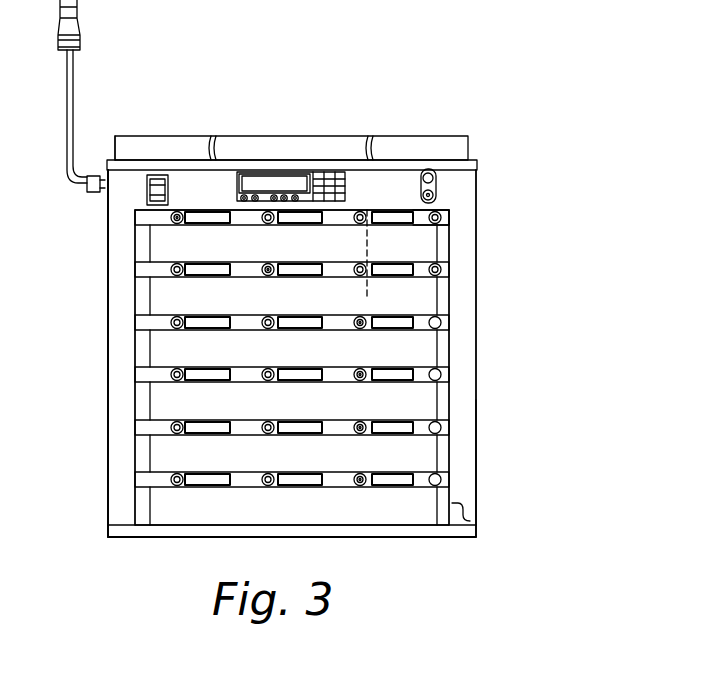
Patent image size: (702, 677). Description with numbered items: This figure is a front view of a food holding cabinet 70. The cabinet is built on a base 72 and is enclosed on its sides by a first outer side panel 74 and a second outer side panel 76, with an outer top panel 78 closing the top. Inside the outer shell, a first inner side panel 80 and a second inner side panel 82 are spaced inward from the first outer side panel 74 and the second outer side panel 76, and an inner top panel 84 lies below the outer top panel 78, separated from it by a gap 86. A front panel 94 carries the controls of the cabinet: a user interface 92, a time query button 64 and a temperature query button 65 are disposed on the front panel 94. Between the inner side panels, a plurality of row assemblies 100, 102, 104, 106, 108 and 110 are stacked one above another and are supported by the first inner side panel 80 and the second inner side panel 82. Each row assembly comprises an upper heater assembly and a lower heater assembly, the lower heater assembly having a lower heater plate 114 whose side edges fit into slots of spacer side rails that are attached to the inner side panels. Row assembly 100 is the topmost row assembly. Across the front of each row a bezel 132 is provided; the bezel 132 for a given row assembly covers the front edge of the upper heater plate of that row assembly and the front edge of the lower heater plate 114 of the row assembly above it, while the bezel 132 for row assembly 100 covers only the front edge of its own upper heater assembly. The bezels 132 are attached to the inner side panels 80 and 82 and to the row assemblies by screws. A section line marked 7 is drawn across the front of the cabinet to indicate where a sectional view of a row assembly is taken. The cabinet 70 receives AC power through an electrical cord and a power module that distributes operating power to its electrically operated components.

The food holding cabinet 70 is at (345, 93).
The base 72 is at (440, 537).
The first outer side panel 74 is at (107, 372).
The second outer side panel 76 is at (477, 495).
The outer top panel 78 is at (252, 137).
The first inner side panel 80 is at (133, 290).
The second inner side panel 82 is at (470, 521).
The inner top panel 84 is at (391, 160).
The gap 86 is at (165, 149).
The user interface 92 is at (237, 183).
The front panel 94 is at (465, 188).
The time query button 64 is at (428, 172).
The temperature query button 65 is at (430, 196).
The lower heater plate 114 is at (450, 214).
The row assembly 100 is at (491, 233).
The row assembly 102 is at (493, 288).
The row assembly 104 is at (494, 340).
The row assembly 106 is at (498, 381).
The row assembly 108 is at (498, 436).
The row assembly 110 is at (496, 468).
The bezel 132 is at (242, 225).
The section line 7- 7 is at (405, 296).